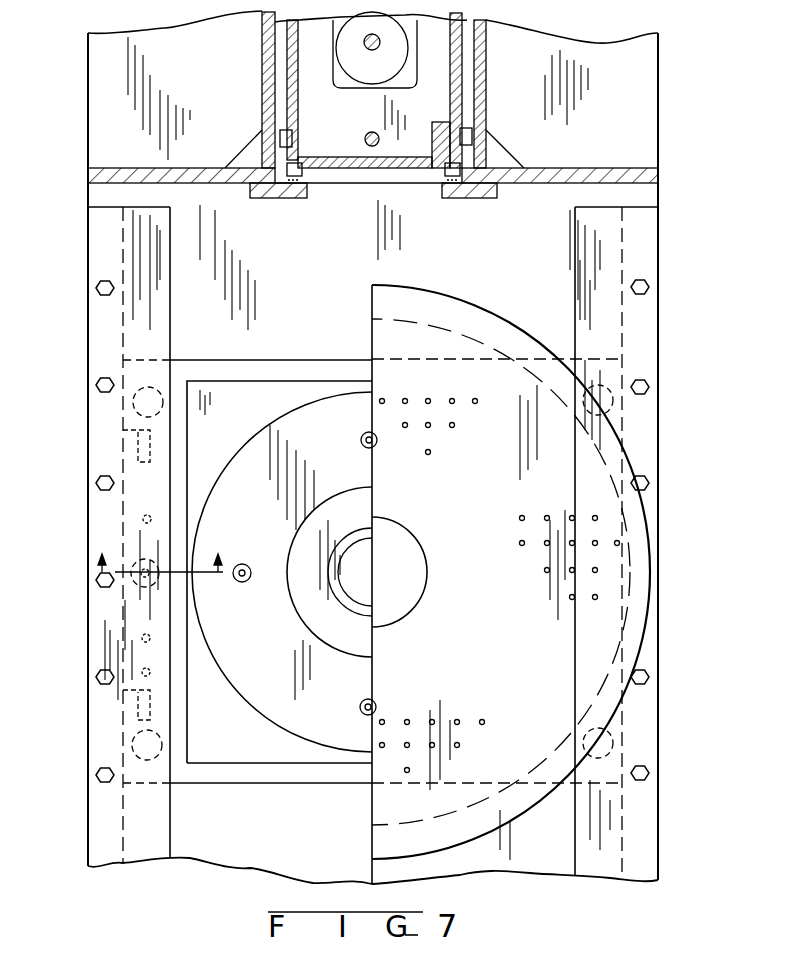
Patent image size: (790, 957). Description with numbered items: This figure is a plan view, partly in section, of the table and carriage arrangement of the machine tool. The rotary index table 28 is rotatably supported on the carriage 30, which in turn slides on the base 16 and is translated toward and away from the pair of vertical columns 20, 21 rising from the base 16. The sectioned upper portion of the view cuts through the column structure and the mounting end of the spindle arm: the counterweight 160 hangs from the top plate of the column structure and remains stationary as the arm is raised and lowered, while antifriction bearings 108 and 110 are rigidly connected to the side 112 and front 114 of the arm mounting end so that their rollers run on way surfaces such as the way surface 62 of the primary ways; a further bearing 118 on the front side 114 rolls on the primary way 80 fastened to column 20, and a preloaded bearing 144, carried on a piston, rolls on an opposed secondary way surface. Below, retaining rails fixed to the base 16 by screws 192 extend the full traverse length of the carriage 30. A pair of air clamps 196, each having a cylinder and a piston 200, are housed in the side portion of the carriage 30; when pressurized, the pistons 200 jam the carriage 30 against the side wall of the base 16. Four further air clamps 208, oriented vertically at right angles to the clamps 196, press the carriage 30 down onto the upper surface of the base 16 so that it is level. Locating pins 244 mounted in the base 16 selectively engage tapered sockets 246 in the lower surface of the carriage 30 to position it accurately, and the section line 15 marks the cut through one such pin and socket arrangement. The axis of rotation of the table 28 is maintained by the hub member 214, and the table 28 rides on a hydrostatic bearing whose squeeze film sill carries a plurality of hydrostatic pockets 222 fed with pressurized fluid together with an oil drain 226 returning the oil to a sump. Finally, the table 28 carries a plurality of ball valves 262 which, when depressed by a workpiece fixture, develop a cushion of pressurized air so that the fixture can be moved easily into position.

The vertical column 21 is at (262, 48).
The side of arm mounting end portion 112 is at (290, 68).
The bearing 108 is at (293, 138).
The front of arm mounting end portion 114 is at (362, 155).
The antifriction bearing 144 is at (458, 130).
The counterweight 160 is at (484, 30).
The vertical column 20 is at (487, 72).
The bearing 110 is at (300, 170).
The bearing 118 is at (448, 172).
The way surface 62 is at (292, 198).
The primary way 80 is at (470, 198).
The screws 192 is at (97, 285).
The air clamps 208 is at (158, 388).
The piston 200 is at (133, 442).
The air clamps 196 is at (150, 451).
The tapered sockets 246 is at (143, 517).
The locating pins 244 is at (139, 588).
The section line 15- 15 is at (168, 551).
The base 16 is at (288, 319).
The carriage 30 is at (324, 370).
The rotary index table 28 is at (496, 317).
The hydrostatic pockets 222 is at (363, 446).
The hub member 214 is at (358, 562).
The oil drain 226 is at (314, 612).
The ball valves 262 is at (477, 402).